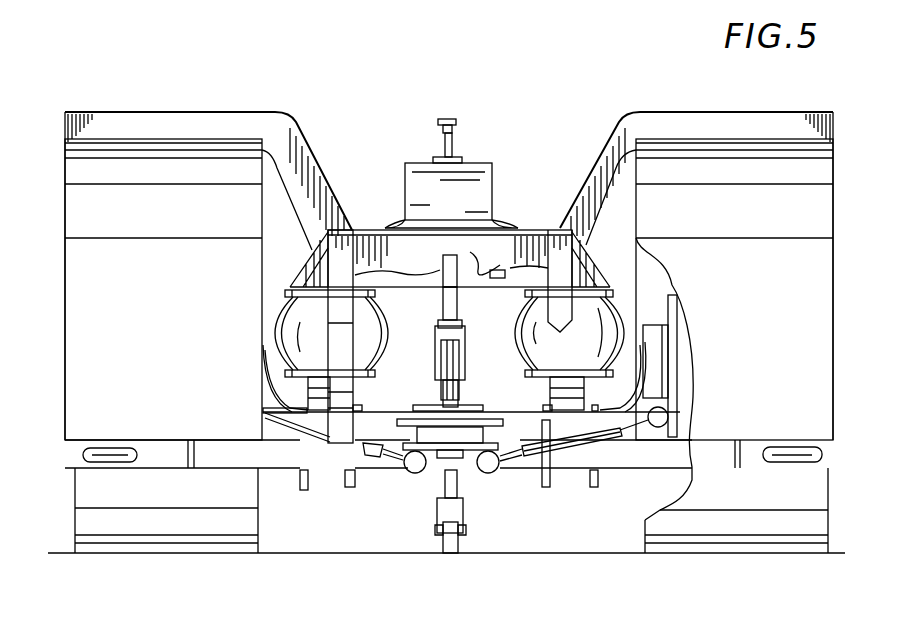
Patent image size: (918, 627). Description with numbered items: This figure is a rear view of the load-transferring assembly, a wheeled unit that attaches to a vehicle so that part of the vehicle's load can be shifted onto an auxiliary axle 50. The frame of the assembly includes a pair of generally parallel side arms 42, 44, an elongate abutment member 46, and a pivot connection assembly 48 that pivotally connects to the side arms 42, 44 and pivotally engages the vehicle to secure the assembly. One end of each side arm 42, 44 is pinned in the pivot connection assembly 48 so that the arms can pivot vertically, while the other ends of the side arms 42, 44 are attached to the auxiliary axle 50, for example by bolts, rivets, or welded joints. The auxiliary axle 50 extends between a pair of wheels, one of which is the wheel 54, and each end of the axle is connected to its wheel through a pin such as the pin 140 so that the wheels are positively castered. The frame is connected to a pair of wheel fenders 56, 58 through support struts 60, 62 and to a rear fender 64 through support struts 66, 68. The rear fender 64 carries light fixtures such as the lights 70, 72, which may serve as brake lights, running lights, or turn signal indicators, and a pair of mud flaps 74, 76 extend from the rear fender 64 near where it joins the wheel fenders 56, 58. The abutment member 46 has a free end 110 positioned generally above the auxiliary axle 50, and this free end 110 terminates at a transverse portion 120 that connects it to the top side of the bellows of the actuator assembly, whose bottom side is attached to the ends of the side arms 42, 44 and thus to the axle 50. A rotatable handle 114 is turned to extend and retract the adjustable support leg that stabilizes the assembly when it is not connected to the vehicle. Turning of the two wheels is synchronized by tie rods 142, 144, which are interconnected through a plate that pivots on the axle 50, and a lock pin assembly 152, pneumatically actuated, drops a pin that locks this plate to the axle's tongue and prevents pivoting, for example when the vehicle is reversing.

The side arm 42 is at (283, 387).
The side arm 44 is at (585, 395).
The elongate abutment member 46 is at (478, 162).
The pivot connection assembly 48 is at (625, 458).
The auxiliary axle 50 is at (383, 412).
The wheel 54 is at (662, 286).
The wheel fender 56 is at (126, 168).
The wheel fender 58 is at (768, 172).
The support strut 60 is at (223, 120).
The support strut 62 is at (675, 120).
The rear fender 64 is at (203, 448).
The support strut 66 is at (340, 240).
The support strut 68 is at (560, 238).
The light 70 is at (106, 458).
The light 72 is at (796, 455).
The mud flap 74 is at (218, 538).
The mud flap 76 is at (750, 535).
The free end 110 is at (470, 208).
The rotatable handle 114 is at (444, 120).
The transverse portion 120 is at (385, 262).
The pin 140 is at (655, 325).
The tie rod 142 is at (385, 458).
The tie rod 144 is at (515, 450).
The lock pin assembly 152 is at (462, 338).